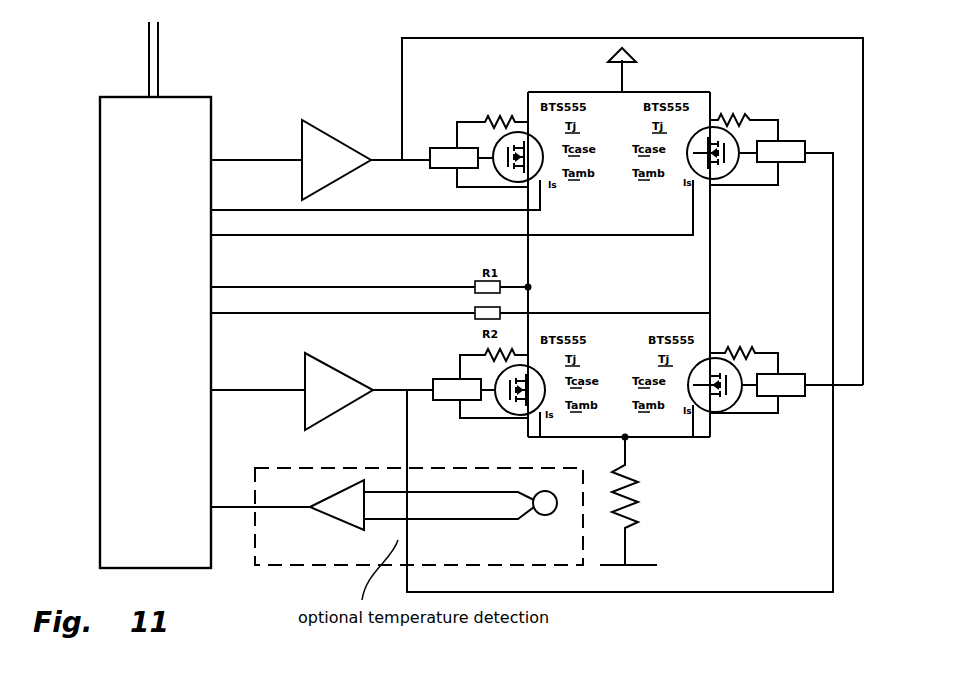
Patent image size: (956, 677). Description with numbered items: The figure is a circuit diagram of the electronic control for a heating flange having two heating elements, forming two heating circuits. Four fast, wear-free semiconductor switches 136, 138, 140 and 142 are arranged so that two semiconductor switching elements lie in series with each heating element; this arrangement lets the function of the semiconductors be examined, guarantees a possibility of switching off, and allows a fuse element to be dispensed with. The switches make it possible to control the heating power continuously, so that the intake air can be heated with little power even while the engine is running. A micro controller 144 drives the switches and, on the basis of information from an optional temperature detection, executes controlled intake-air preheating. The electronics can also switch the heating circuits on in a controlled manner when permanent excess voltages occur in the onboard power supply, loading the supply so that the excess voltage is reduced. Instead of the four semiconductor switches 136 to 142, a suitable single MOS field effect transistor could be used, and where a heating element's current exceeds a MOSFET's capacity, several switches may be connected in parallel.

The semiconductor switch 136 is at (545, 172).
The semiconductor switch 138 is at (735, 178).
The semiconductor switch 140 is at (516, 415).
The semiconductor switch 142 is at (740, 412).
The micro controller 144 is at (157, 380).